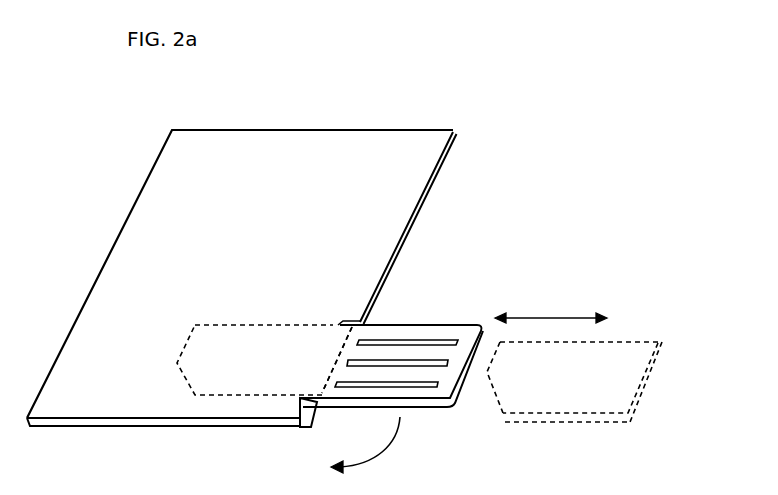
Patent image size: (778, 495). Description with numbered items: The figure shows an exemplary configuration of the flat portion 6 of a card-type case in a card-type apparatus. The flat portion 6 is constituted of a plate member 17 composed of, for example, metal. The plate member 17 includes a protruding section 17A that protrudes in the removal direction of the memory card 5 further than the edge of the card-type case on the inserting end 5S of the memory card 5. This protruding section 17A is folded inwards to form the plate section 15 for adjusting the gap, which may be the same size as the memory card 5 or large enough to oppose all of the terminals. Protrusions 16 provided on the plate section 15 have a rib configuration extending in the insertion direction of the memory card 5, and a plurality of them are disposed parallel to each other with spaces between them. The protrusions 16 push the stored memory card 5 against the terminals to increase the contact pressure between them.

The flat portion 6 is at (318, 150).
The plate member 17 is at (393, 206).
The protruding section 17A is at (393, 340).
The plate section for adjusting the gap 15 is at (487, 322).
The protrusions 16 is at (450, 366).
The memory card 5 is at (230, 325).
The inserting end 5S is at (322, 375).